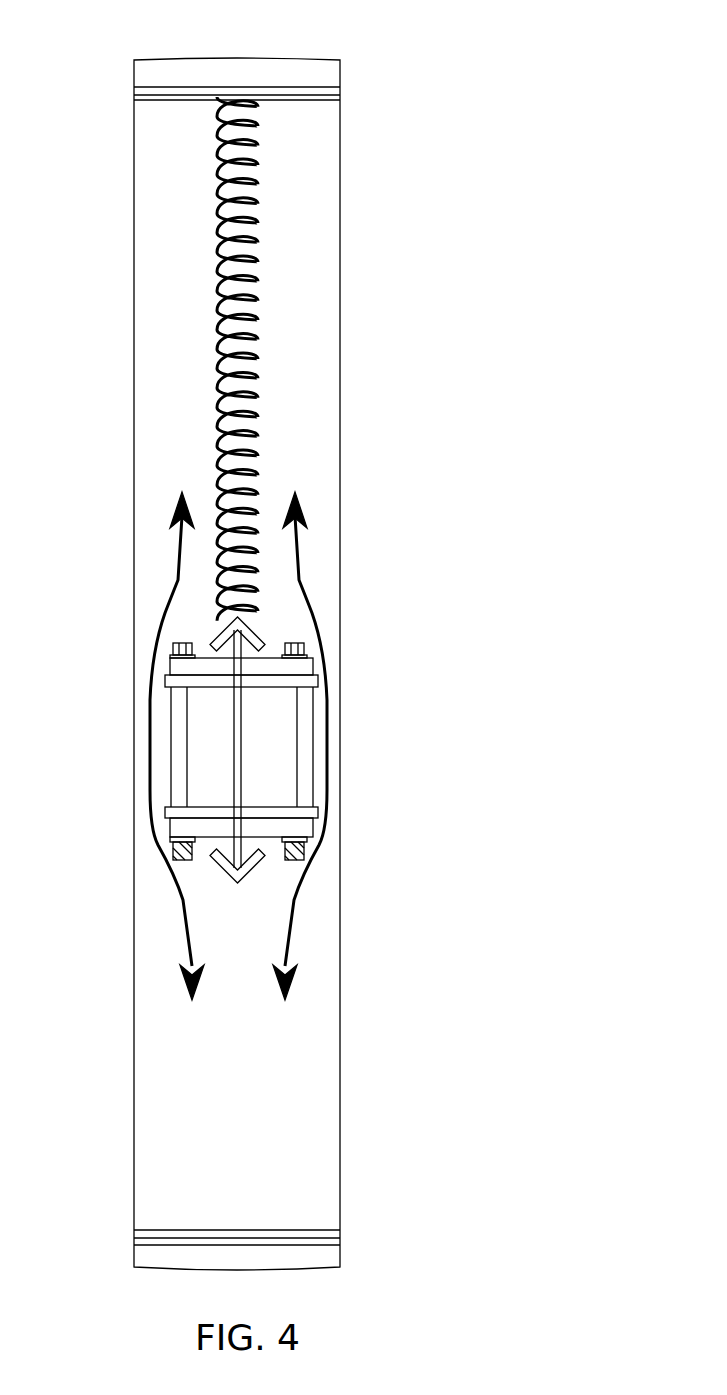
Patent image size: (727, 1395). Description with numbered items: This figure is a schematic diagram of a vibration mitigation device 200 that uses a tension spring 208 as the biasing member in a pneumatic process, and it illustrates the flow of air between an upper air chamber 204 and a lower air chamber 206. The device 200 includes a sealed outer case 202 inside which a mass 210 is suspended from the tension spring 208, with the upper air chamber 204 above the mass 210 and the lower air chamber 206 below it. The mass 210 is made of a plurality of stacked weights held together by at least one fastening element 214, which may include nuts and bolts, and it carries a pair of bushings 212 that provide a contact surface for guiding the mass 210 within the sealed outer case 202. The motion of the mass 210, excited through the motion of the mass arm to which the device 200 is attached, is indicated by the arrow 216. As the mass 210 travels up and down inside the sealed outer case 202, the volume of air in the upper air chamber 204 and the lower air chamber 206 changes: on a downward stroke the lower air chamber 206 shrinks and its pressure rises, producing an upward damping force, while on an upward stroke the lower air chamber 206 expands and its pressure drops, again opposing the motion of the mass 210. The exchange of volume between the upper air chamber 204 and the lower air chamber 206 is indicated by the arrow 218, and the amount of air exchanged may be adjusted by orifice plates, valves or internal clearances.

The vibration mitigation device 200 is at (276, 37).
The sealed outer case 202 is at (134, 376).
The upper air chamber 204 is at (293, 272).
The lower air chamber 206 is at (293, 1082).
The tension spring 208 is at (257, 393).
The mass 210 is at (193, 720).
The bushings 212 is at (303, 810).
The fastening element 214 is at (300, 645).
The arrow 216 is at (236, 788).
The arrow 218 is at (297, 557).